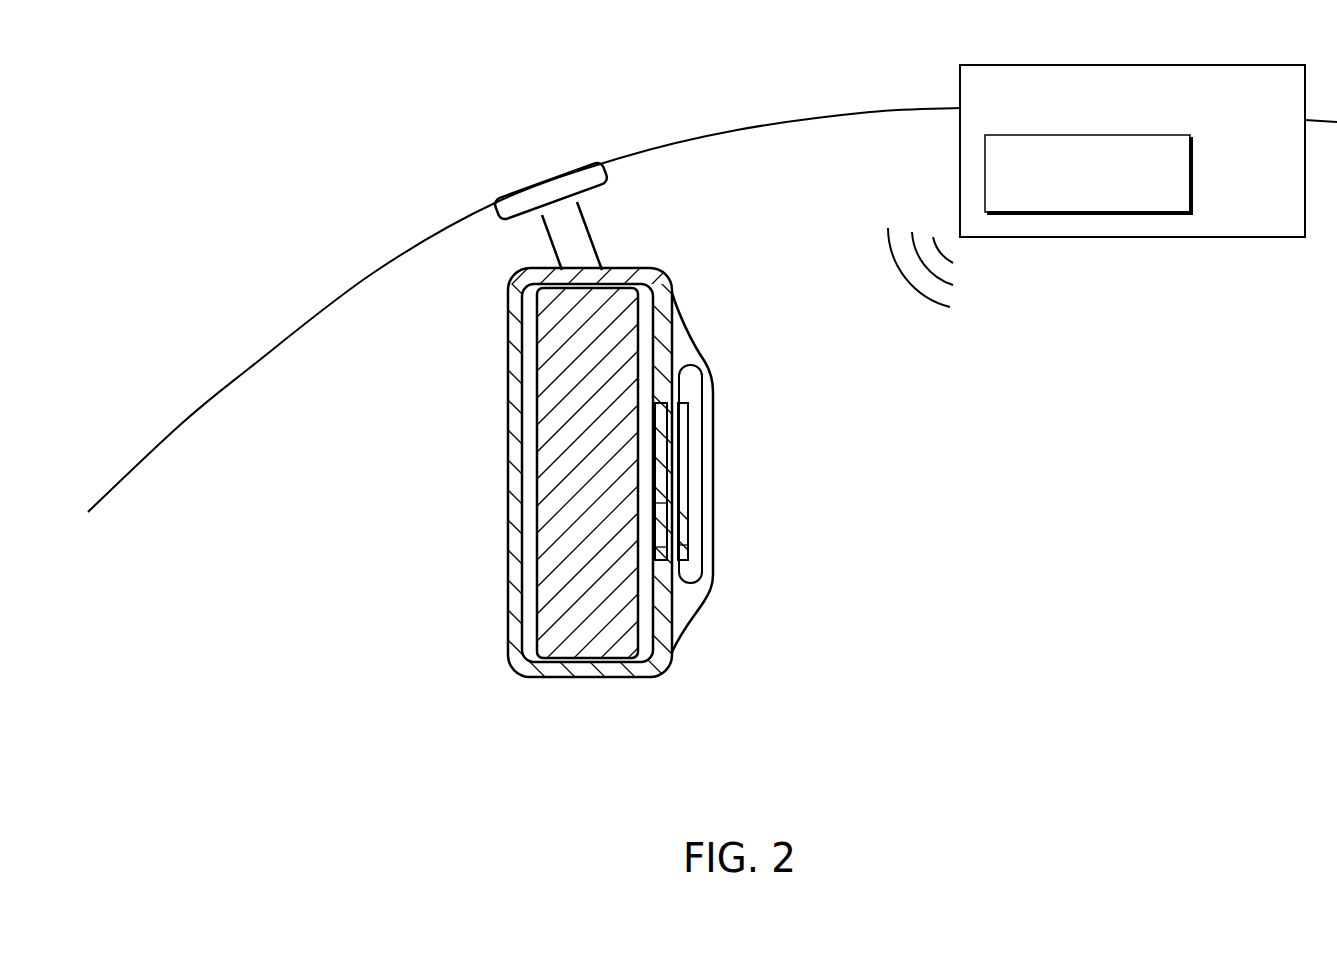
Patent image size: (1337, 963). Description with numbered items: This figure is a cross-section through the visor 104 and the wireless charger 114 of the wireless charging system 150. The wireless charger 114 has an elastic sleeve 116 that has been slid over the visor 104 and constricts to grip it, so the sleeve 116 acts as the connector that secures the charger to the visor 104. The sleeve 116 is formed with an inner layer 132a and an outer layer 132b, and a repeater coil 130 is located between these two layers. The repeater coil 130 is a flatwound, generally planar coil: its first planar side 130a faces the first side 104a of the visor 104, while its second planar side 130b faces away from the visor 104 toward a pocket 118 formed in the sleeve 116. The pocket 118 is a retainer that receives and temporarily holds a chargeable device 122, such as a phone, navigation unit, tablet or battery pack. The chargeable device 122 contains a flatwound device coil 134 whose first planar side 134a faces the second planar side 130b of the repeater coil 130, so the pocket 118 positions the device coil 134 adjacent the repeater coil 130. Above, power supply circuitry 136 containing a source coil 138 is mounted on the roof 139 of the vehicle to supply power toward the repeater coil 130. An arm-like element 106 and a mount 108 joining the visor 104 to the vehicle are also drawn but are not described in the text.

The visor 104 is at (620, 320).
The first side of the visor 104a is at (653, 470).
The stem 106 is at (598, 236).
The skin-contacting pad 108 is at (571, 172).
The wireless charger 114 is at (390, 737).
The sleeve 116 is at (683, 327).
The pocket 118 is at (687, 610).
The chargeable device 122 is at (693, 477).
The repeater coil 130 is at (665, 438).
The first planar side of the repeater coil 130a is at (655, 547).
The second planar side of the repeater coil 130b is at (665, 503).
The inner layer 132a is at (514, 450).
The outer layer 132b is at (510, 397).
The device coil 134 is at (683, 417).
The first planar side of the device coil 134a is at (663, 545).
The power supply circuitry 136 is at (1131, 65).
The source coil 138 is at (1192, 176).
The roof 139 is at (905, 108).
The wireless charging system 150 is at (277, 240).